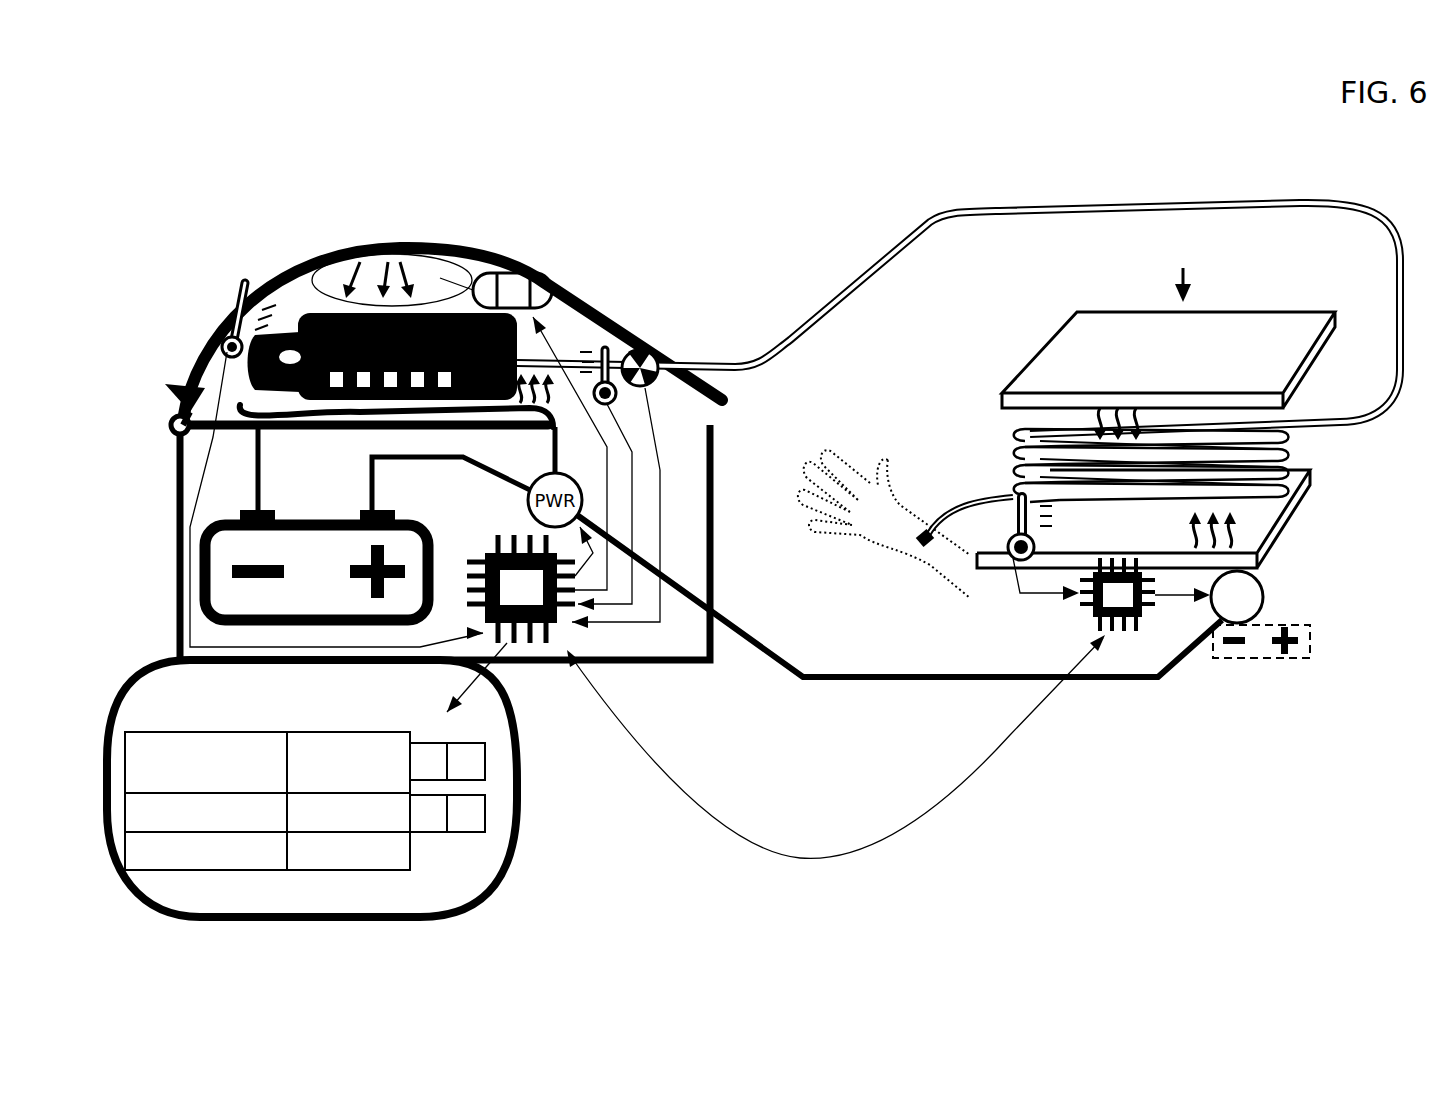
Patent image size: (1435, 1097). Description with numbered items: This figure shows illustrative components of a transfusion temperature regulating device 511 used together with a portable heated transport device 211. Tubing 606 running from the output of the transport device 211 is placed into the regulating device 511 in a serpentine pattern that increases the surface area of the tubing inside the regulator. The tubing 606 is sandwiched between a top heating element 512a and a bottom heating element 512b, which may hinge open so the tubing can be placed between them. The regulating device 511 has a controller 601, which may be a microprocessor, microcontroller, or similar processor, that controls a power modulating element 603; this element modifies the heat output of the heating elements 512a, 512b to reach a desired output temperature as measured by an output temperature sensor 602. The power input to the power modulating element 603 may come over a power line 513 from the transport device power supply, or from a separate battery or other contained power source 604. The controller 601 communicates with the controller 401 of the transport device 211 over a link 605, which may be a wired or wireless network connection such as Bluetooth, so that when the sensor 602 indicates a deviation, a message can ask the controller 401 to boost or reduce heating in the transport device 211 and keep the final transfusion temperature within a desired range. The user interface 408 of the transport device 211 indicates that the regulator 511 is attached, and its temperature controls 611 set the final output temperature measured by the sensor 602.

The transport device 211 is at (502, 250).
The controller 401 is at (484, 554).
The user interface 408 is at (356, 788).
The temperature controls 611 is at (430, 743).
The transfusion temperature regulating device 511 is at (1183, 271).
The top heating element 512a is at (1085, 338).
The bottom heating element 512b is at (1275, 537).
The tubing 606 is at (1288, 468).
The power modulating element 603 is at (1265, 600).
The contained power source 604 is at (1312, 640).
The controller 601 is at (1095, 622).
The output temperature sensor 602 is at (1010, 560).
The power line 513 is at (905, 678).
The link 605 is at (983, 762).